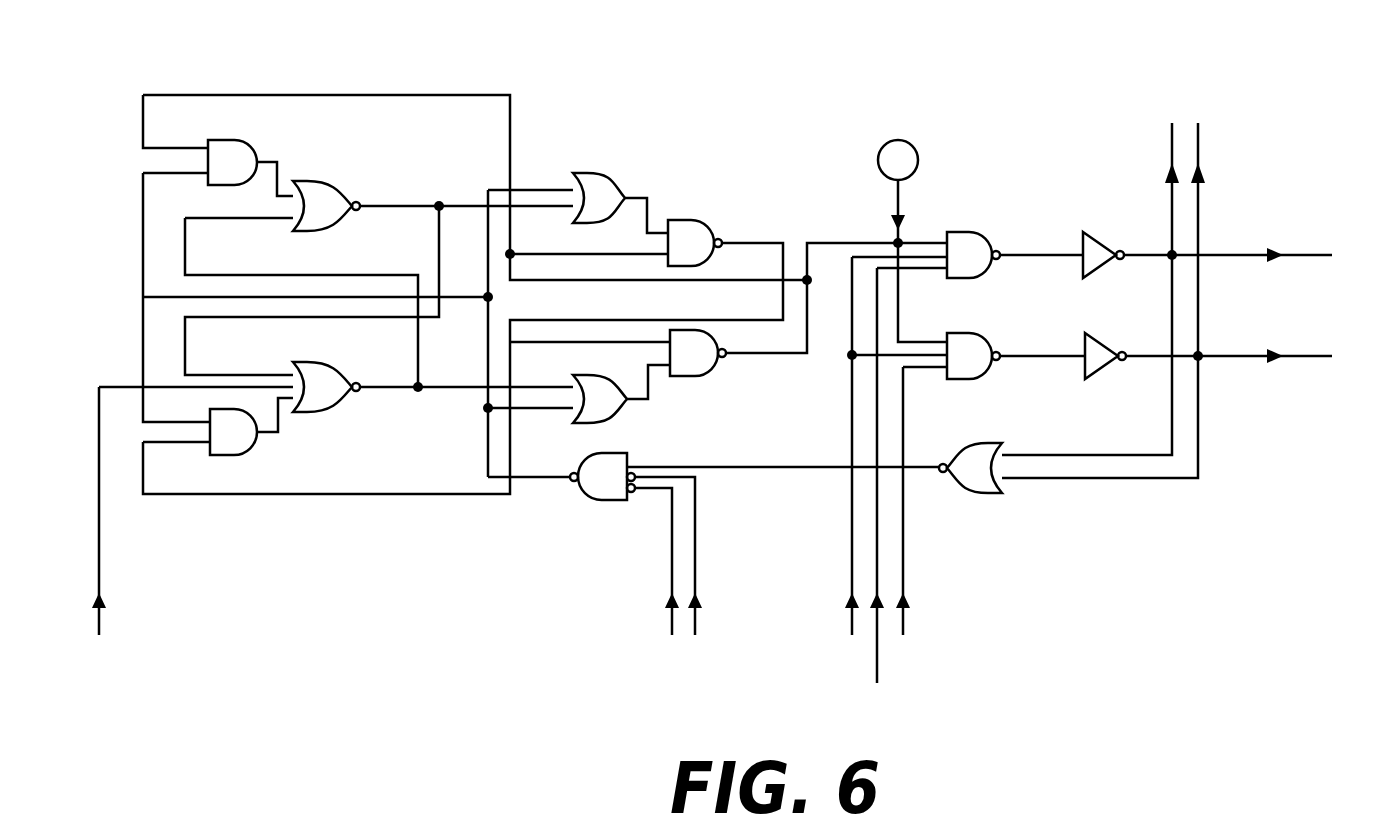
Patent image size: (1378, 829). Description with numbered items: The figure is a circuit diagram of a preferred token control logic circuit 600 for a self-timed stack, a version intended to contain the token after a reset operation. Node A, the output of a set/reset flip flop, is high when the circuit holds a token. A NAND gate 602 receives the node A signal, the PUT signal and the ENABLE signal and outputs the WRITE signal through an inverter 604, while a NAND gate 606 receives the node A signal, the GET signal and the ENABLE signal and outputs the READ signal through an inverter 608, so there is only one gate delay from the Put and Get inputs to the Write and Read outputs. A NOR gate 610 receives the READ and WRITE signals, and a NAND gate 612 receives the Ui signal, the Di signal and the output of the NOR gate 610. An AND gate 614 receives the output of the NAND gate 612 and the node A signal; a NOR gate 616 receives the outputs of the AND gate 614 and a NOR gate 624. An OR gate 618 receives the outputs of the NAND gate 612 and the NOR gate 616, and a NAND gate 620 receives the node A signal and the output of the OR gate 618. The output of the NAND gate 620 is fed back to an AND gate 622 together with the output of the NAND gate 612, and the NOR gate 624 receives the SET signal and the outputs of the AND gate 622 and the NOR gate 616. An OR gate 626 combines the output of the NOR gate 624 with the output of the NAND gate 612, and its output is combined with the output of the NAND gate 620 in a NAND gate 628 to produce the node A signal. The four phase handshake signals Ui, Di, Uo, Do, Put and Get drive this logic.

The token control logic circuit 600 is at (1062, 92).
The NAND gate 602 is at (998, 213).
The inverter 604 is at (1098, 237).
The NAND gate 606 is at (998, 313).
The inverter 608 is at (1100, 333).
The NOR gate 610 is at (986, 443).
The NAND gate 612 is at (622, 453).
The AND gate 614 is at (246, 141).
The NOR gate 616 is at (333, 182).
The OR gate 618 is at (620, 175).
The NAND gate 620 is at (712, 220).
The AND gate 622 is at (250, 450).
The NOR gate 624 is at (335, 403).
The OR gate 626 is at (625, 406).
The NAND gate 628 is at (724, 370).